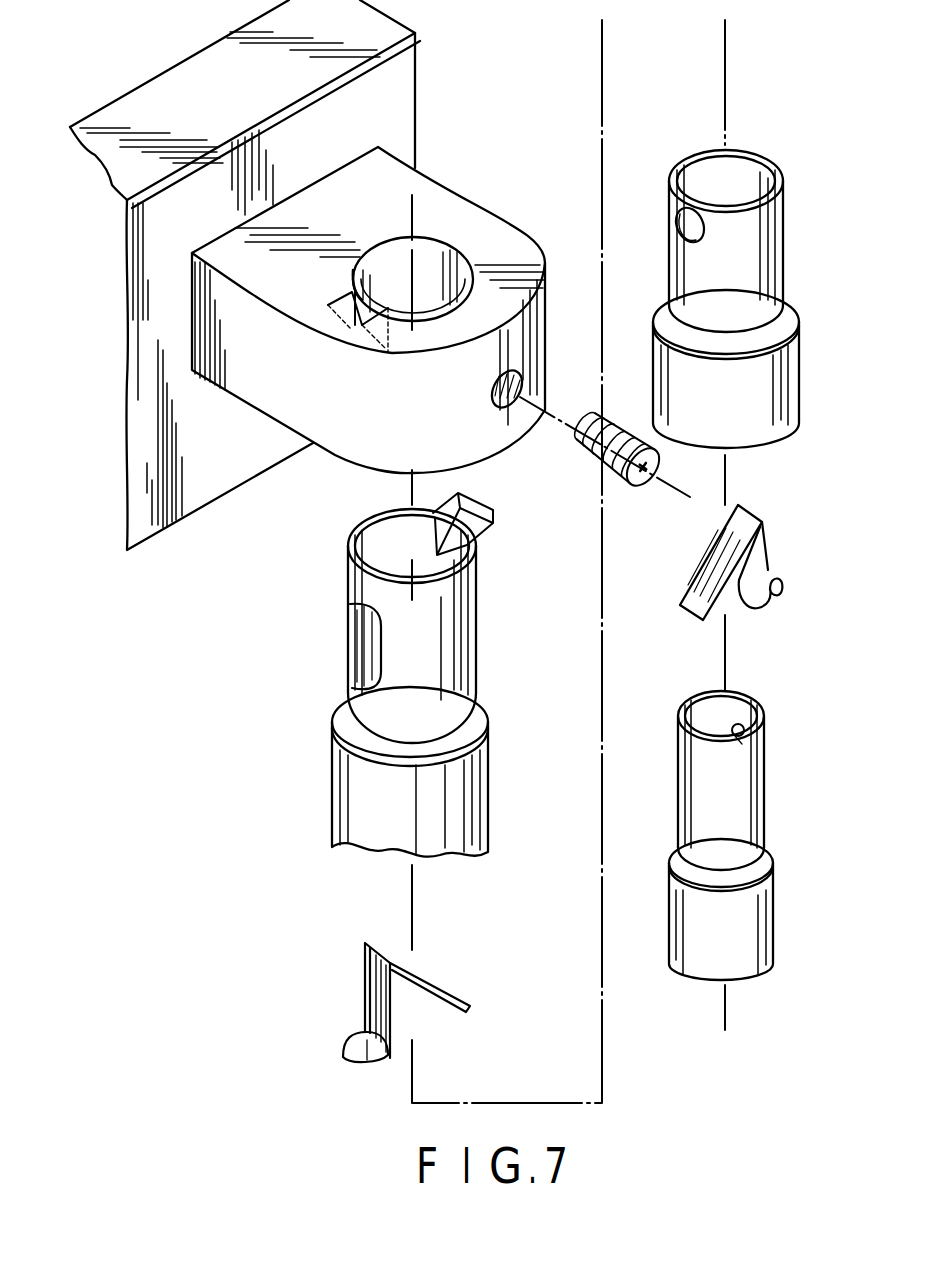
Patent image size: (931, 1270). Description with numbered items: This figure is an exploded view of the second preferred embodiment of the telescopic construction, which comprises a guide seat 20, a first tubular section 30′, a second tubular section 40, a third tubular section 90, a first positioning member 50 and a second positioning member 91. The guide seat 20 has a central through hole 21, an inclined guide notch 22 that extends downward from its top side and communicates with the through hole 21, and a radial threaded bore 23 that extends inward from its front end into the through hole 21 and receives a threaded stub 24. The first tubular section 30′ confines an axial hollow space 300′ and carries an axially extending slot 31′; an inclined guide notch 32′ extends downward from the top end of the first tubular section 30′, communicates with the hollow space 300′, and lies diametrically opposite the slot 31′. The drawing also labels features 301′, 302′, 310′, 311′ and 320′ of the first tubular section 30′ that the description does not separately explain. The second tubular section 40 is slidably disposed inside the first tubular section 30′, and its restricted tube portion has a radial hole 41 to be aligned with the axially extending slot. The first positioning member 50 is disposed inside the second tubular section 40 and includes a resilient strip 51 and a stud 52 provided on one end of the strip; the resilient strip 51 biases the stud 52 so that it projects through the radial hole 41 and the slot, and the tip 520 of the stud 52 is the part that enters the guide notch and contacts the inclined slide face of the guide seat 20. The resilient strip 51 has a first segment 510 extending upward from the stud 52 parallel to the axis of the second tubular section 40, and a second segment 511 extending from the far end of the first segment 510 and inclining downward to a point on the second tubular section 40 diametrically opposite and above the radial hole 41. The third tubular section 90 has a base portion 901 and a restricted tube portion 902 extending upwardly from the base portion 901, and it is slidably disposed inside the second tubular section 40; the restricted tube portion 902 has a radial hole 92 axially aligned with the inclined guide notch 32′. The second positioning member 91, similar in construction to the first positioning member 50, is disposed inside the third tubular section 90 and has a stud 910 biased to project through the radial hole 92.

The guide seat 20 is at (392, 304).
The central through hole 21 is at (433, 253).
The inclined guide notch 22 is at (358, 340).
The radial threaded bore 23 is at (517, 386).
The threaded stub 24 is at (606, 474).
The second tubular section 40 is at (729, 299).
The radial hole 41 is at (690, 244).
The first tubular section 30′ is at (424, 654).
The axial hollow space 300′ is at (362, 543).
The lower cylinder 301′ is at (468, 779).
The upper tube 302′ is at (447, 636).
The slot opening 310′ is at (357, 604).
The axially extending slot 31′ is at (324, 630).
The flange 311′ is at (345, 701).
The inclined guide notch 32′ is at (506, 503).
The bent portion of tab 320′ is at (495, 516).
The first positioning member 50 is at (380, 1014).
The resilient strip 51 is at (380, 990).
The first segment 510 is at (364, 1014).
The second segment 511 is at (428, 980).
The stud 52 is at (331, 1057).
The tip 520 is at (347, 1049).
The third tubular section 90 is at (745, 830).
The base portion 901 is at (738, 979).
The restricted tube portion 902 is at (750, 792).
The second positioning member 91 is at (751, 552).
The stud 910 is at (770, 586).
The radial hole 92 is at (736, 724).